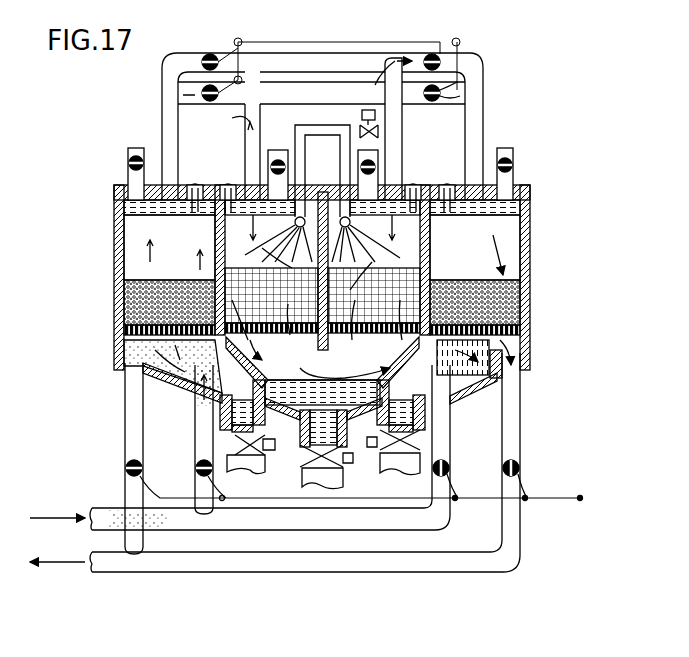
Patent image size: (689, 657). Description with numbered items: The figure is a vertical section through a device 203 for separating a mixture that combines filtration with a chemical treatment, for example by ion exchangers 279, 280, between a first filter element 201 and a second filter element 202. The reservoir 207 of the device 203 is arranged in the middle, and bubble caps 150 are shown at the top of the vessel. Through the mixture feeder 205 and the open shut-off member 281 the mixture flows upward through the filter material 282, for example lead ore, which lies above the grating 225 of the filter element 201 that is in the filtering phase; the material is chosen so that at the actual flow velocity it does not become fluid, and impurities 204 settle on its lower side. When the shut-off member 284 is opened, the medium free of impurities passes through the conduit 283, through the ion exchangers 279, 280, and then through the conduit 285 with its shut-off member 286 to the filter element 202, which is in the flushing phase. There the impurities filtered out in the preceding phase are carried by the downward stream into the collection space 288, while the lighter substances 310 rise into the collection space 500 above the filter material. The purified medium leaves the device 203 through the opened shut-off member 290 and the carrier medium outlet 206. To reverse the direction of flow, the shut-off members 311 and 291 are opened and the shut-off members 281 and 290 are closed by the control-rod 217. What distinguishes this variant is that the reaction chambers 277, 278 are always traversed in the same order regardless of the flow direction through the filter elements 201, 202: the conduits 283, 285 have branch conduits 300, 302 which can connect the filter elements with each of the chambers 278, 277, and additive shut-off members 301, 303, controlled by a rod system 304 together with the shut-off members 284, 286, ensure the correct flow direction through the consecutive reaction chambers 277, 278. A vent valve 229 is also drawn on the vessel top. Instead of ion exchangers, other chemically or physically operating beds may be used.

The bubble caps 150 is at (230, 182).
The first filter element 201 is at (122, 280).
The second filter element 202 is at (532, 294).
The device 203 is at (325, 244).
The impurities 204 is at (140, 343).
The mixture feeder 205 is at (98, 512).
The carrier medium outlet 206 is at (98, 558).
The reservoir 207 is at (434, 254).
The control-rod 217 is at (412, 502).
The grating 225 is at (122, 327).
The vent valve 229 is at (128, 163).
The reaction chamber 277 is at (230, 236).
The reaction chamber 278 is at (422, 236).
The ion exchanger 279 is at (268, 340).
The ion exchanger 280 is at (352, 338).
The shut-off member 281 is at (198, 462).
The filter material 282 is at (120, 298).
The conduit 283 is at (166, 120).
The shut-off member 284 is at (216, 100).
The conduit 285 is at (480, 136).
The shut-off member 286 is at (432, 52).
The collection space 288 is at (484, 386).
The shut-off member 290 is at (520, 462).
The shut-off member 291 is at (128, 462).
The branch conduit 300 is at (308, 126).
The additive shut-off member 301 is at (210, 52).
The branch conduit 302 is at (298, 94).
The additive shut-off member 303 is at (446, 104).
The rod system 304 is at (352, 40).
The lighter substances 310 is at (118, 202).
The shut-off member 311 is at (446, 462).
The collection space 500 is at (116, 218).